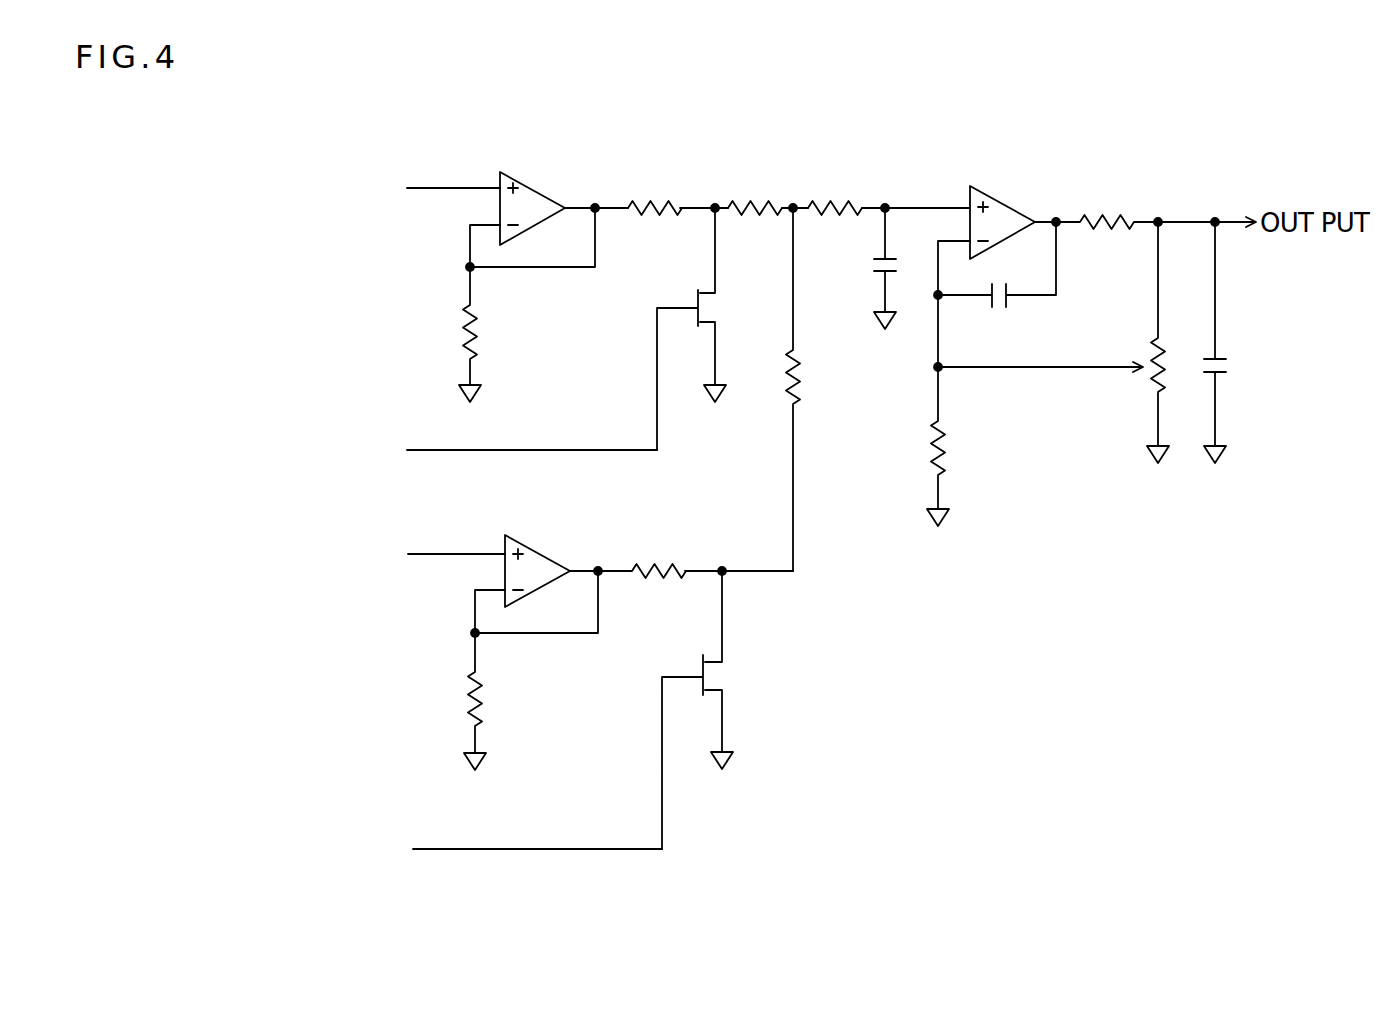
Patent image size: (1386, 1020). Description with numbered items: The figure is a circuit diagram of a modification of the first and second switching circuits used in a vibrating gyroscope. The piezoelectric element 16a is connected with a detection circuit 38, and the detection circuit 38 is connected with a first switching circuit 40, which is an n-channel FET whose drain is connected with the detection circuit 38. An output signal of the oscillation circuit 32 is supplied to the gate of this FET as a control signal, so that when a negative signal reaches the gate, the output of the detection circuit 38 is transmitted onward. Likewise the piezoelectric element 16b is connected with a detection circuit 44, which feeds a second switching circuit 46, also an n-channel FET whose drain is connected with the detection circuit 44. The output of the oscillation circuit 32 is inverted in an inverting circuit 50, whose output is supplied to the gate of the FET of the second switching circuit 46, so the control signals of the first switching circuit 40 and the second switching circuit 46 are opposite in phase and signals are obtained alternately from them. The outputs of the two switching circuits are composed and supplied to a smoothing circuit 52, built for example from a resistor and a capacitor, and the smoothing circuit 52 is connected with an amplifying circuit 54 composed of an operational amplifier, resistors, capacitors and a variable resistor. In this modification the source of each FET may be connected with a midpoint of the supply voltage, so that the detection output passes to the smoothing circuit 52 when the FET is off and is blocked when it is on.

The piezoelectric element 16a is at (320, 184).
The piezoelectric element 16b is at (326, 558).
The oscillation circuit 32 is at (402, 449).
The detection circuit 38 is at (569, 184).
The first switching circuit 40 is at (682, 281).
The detection circuit 44 is at (573, 554).
The second switching circuit 46 is at (685, 646).
The inverting circuit 50 is at (407, 850).
The smoothing circuit 52 is at (873, 183).
The amplifying circuit 54 is at (1032, 194).